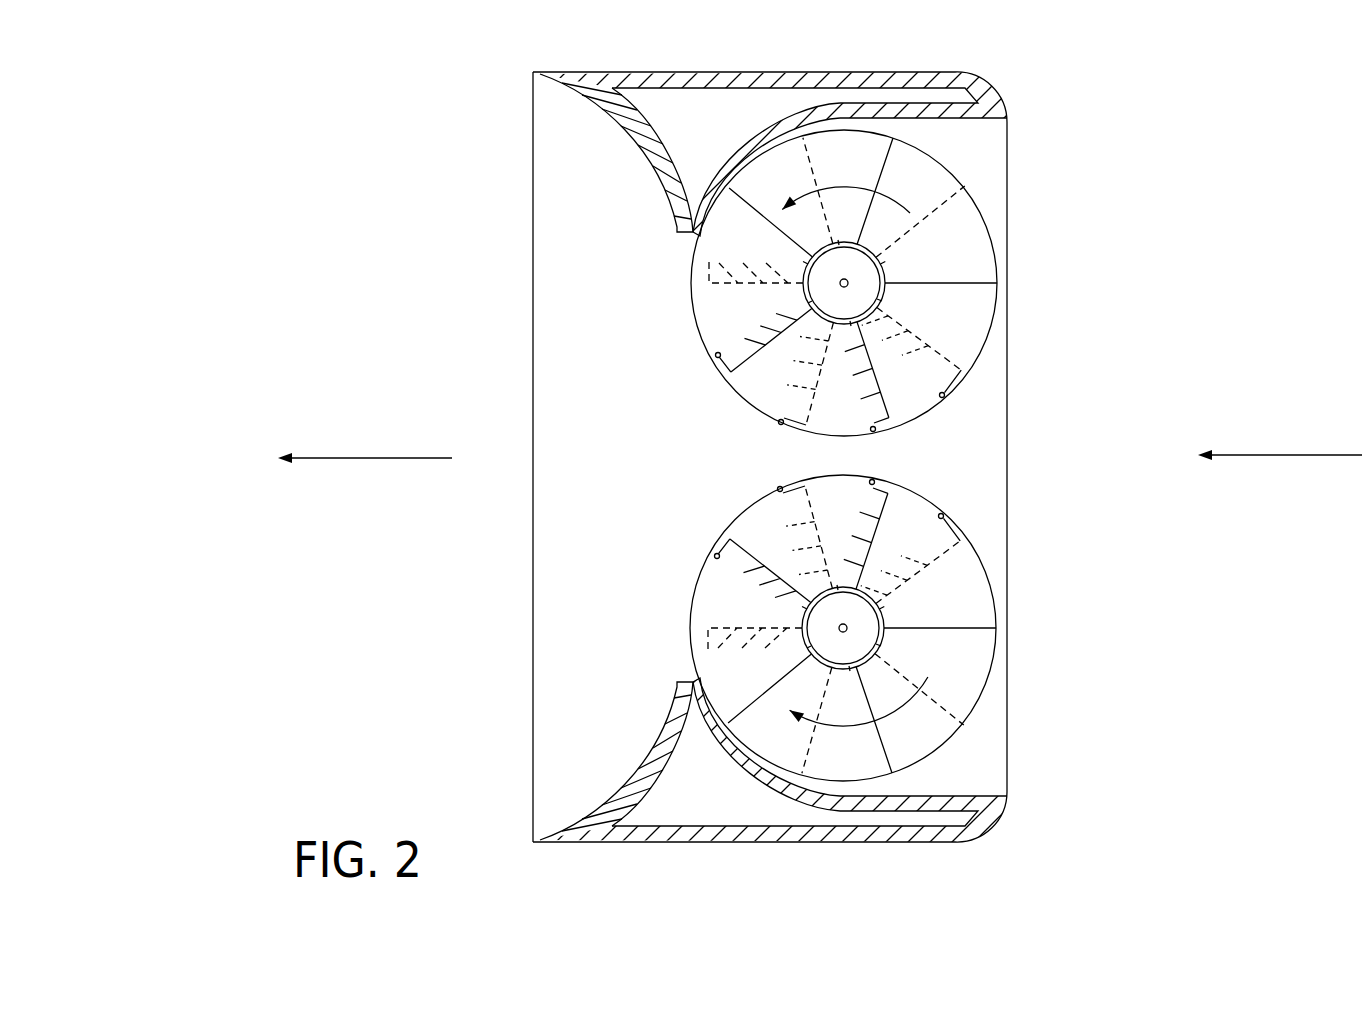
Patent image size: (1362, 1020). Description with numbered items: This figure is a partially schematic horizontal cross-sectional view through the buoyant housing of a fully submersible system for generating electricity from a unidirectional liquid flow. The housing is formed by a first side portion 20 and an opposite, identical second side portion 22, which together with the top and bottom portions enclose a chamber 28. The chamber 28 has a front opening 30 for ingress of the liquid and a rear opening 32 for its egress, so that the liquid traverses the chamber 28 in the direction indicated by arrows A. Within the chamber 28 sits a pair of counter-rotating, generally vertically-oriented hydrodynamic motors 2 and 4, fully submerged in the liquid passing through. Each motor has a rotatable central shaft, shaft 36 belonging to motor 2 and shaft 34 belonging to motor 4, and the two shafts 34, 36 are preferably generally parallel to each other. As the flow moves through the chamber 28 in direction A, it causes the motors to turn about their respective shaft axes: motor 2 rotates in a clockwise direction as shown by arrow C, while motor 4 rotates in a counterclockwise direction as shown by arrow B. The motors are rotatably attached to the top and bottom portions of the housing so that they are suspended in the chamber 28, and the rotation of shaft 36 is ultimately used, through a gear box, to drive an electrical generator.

The hydrodynamic motor 2 is at (981, 550).
The hydrodynamic motor 4 is at (953, 164).
The first side portion 20 is at (920, 71).
The second side portion 22 is at (933, 844).
The chamber 28 is at (943, 430).
The front opening 30 is at (1008, 473).
The rear opening 32 is at (533, 627).
The rotatable central shaft 34 is at (844, 283).
The rotatable central shaft 36 is at (843, 628).
The liquid flow direction arrow A is at (353, 458).
The rotation direction arrow B is at (910, 213).
The rotation direction arrow C is at (928, 677).